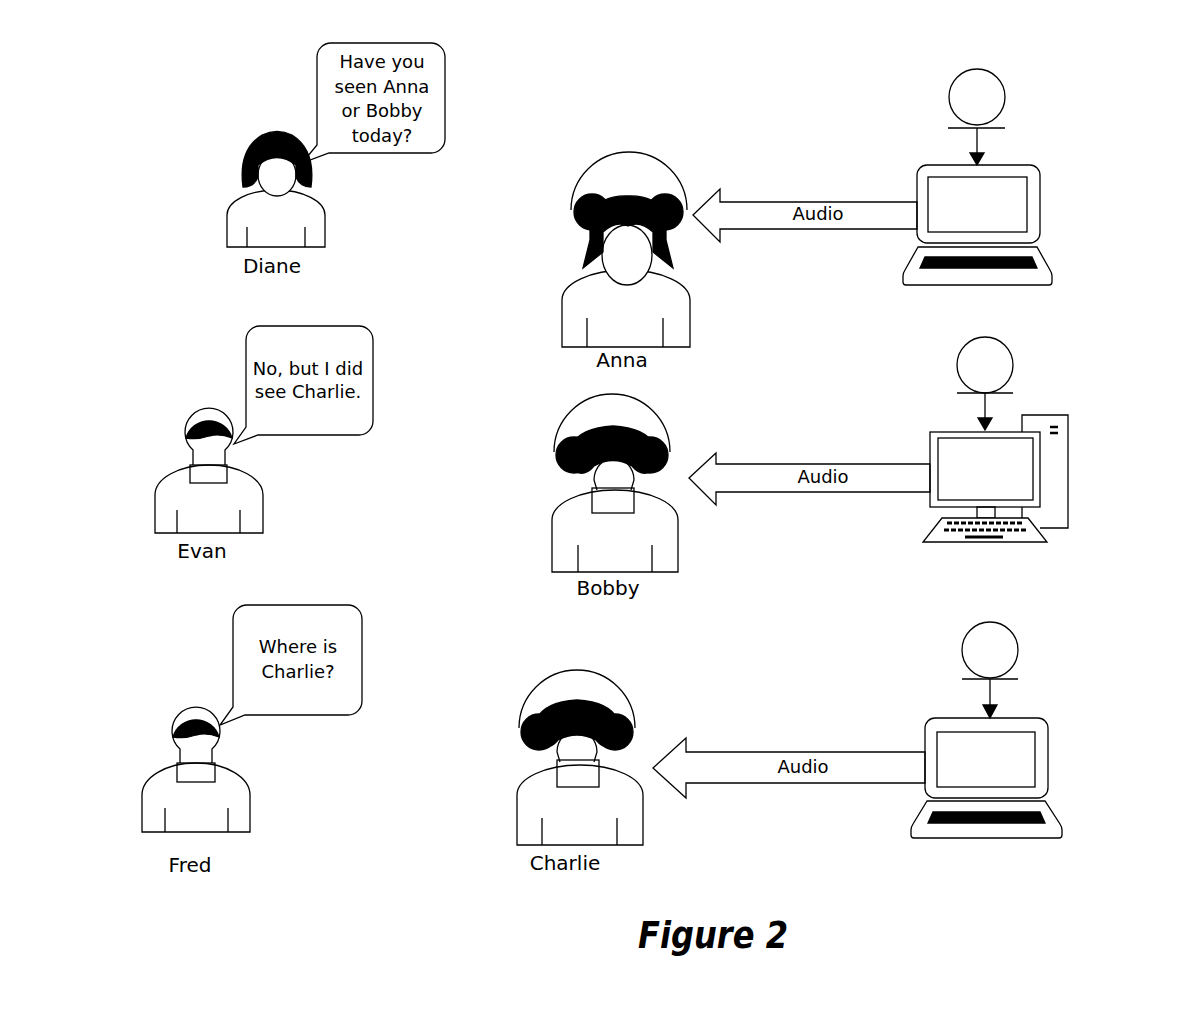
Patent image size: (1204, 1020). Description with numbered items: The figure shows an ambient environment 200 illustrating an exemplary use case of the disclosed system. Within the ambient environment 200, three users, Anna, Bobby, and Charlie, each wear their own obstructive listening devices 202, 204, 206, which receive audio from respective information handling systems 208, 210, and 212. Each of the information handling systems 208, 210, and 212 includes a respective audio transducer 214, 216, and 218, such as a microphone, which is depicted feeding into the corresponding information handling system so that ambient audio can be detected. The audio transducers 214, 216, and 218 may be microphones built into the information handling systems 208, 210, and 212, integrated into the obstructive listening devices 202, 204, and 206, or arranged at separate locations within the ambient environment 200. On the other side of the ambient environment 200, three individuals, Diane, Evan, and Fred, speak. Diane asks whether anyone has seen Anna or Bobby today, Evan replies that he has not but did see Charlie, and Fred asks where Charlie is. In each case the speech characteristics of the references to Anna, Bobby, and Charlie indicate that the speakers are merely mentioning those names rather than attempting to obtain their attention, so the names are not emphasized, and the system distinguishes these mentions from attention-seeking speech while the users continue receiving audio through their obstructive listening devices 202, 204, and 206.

The ambient environment 200 is at (1116, 160).
The obstructive listening device 202 is at (573, 198).
The obstructive listening device 204 is at (560, 440).
The obstructive listening device 206 is at (522, 716).
The information handling system 208 is at (1038, 276).
The information handling system 210 is at (1025, 530).
The information handling system 212 is at (1045, 828).
The audio transducer 214 is at (960, 78).
The audio transducer 216 is at (966, 346).
The audio transducer 218 is at (971, 631).